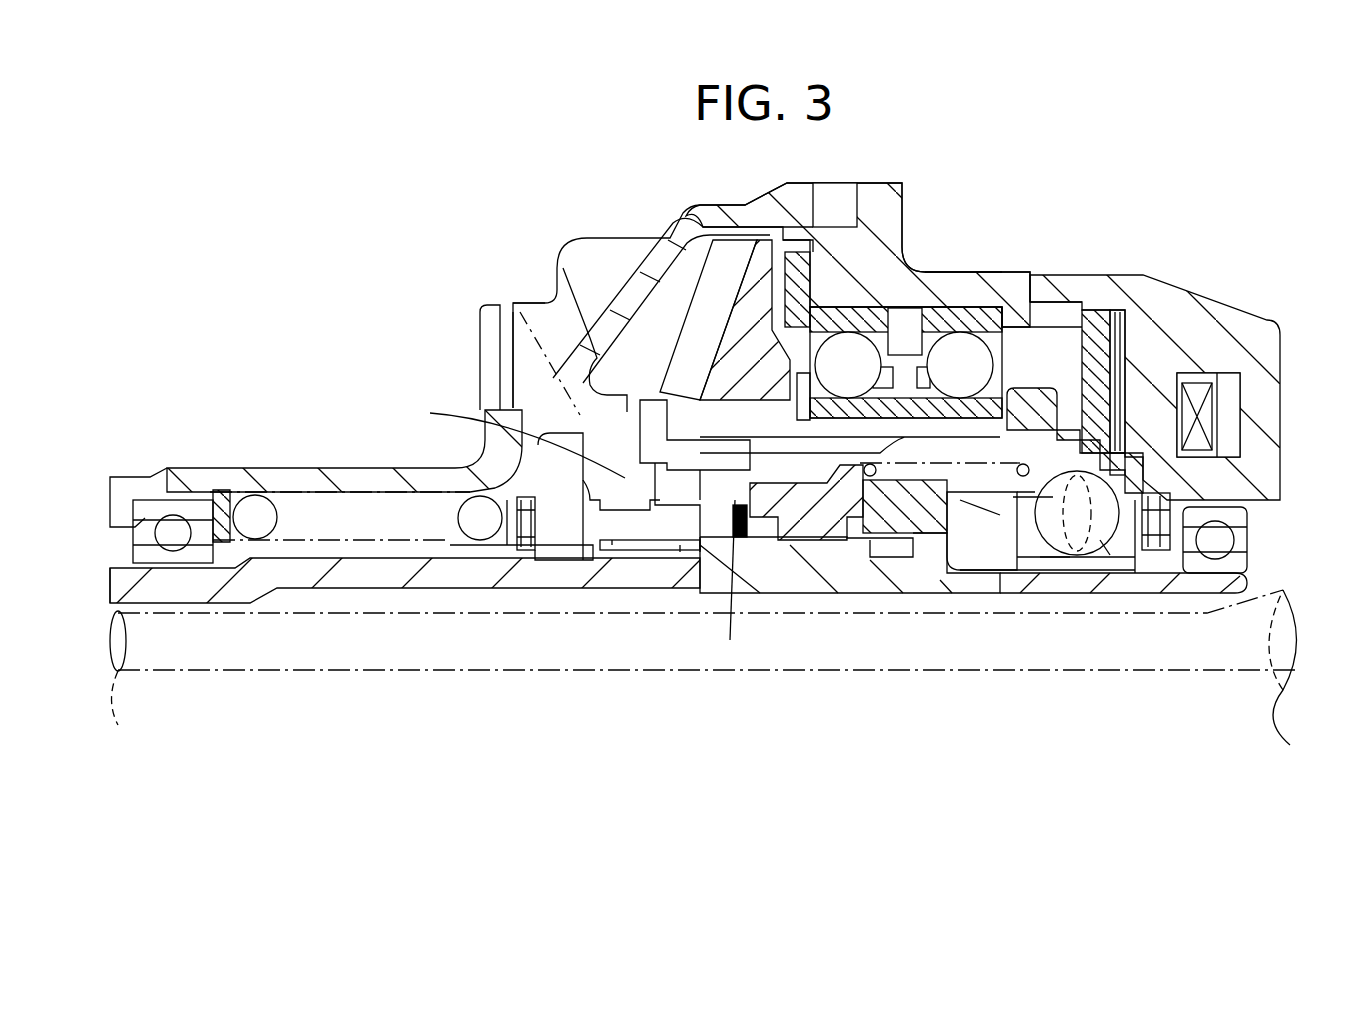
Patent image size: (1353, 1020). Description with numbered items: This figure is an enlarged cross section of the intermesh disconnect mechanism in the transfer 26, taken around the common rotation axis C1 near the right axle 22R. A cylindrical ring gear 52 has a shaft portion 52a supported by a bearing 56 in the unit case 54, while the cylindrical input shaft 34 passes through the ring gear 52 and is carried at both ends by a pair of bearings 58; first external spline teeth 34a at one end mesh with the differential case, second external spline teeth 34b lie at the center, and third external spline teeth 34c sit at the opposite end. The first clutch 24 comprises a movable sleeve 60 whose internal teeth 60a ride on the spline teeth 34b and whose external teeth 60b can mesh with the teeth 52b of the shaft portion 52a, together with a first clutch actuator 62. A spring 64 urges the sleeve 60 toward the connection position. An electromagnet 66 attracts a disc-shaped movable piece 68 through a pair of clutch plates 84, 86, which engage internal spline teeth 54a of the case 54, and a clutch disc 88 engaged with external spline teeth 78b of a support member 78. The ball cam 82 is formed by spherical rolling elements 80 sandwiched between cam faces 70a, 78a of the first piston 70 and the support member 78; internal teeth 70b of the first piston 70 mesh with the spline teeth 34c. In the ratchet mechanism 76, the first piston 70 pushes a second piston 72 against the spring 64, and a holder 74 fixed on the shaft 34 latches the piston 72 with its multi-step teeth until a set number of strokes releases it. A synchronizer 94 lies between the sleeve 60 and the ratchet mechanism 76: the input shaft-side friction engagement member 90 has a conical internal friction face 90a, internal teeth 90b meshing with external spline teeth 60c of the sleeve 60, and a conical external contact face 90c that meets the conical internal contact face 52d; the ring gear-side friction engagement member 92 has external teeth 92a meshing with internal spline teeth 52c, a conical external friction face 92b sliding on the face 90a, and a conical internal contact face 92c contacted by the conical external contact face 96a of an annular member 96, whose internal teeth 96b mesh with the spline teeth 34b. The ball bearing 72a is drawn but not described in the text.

The right axle 22R is at (130, 641).
The rotation axis C1 is at (480, 668).
The first clutch 24 is at (508, 466).
The transfer 26 is at (1172, 232).
The input shaft 34 is at (472, 596).
The first external spline teeth 34a is at (140, 565).
The second external spline teeth 34b is at (845, 596).
The third external spline teeth 34c is at (972, 575).
The ring gear 52 is at (690, 245).
The shaft portion 52a is at (982, 420).
The teeth 52b is at (515, 325).
The internal spline teeth 52c is at (948, 455).
The conical internal contact face 52d is at (562, 292).
The unit case 54 is at (1230, 318).
The internal spline teeth 54a is at (1085, 330).
The bearing 56 is at (815, 262).
The bearings 58 is at (175, 520).
The movable sleeve 60 is at (555, 558).
The internal teeth 60a is at (567, 545).
The external teeth 60b is at (615, 470).
The external spline teeth 60c is at (583, 562).
The first clutch actuator 62 is at (1272, 410).
The spring 64 is at (255, 512).
The electromagnet 66 is at (1205, 418).
The movable piece 68 is at (1030, 355).
The first piston 70 is at (1062, 560).
The cam face 70a is at (1030, 540).
The internal teeth 70b is at (1050, 565).
The second piston 72 is at (808, 515).
The ball bearing 72a is at (906, 362).
The holder 74 is at (932, 545).
The ratchet mechanism 76 is at (985, 520).
The support member 78 is at (1130, 520).
The cam face 78a is at (1170, 525).
The external spline teeth 78b is at (1080, 450).
The spherical rolling elements 80 is at (1108, 555).
The ball cam 82 is at (1108, 560).
The clutch plate 84 is at (1098, 310).
The clutch plate 86 is at (1118, 310).
The clutch disc 88 is at (1126, 460).
The friction engagement member 90 is at (655, 405).
The conical internal friction face 90a is at (655, 392).
The internal teeth 90b is at (614, 550).
The conical external contact face 90c is at (718, 505).
The friction engagement member 92 is at (745, 540).
The external teeth 92a is at (748, 540).
The conical external friction face 92b is at (730, 584).
The conical internal contact face 92c is at (650, 315).
The synchronizer 94 is at (805, 373).
The annular member 96 is at (665, 550).
The conical external contact face 96a is at (680, 555).
The internal teeth 96b is at (702, 555).